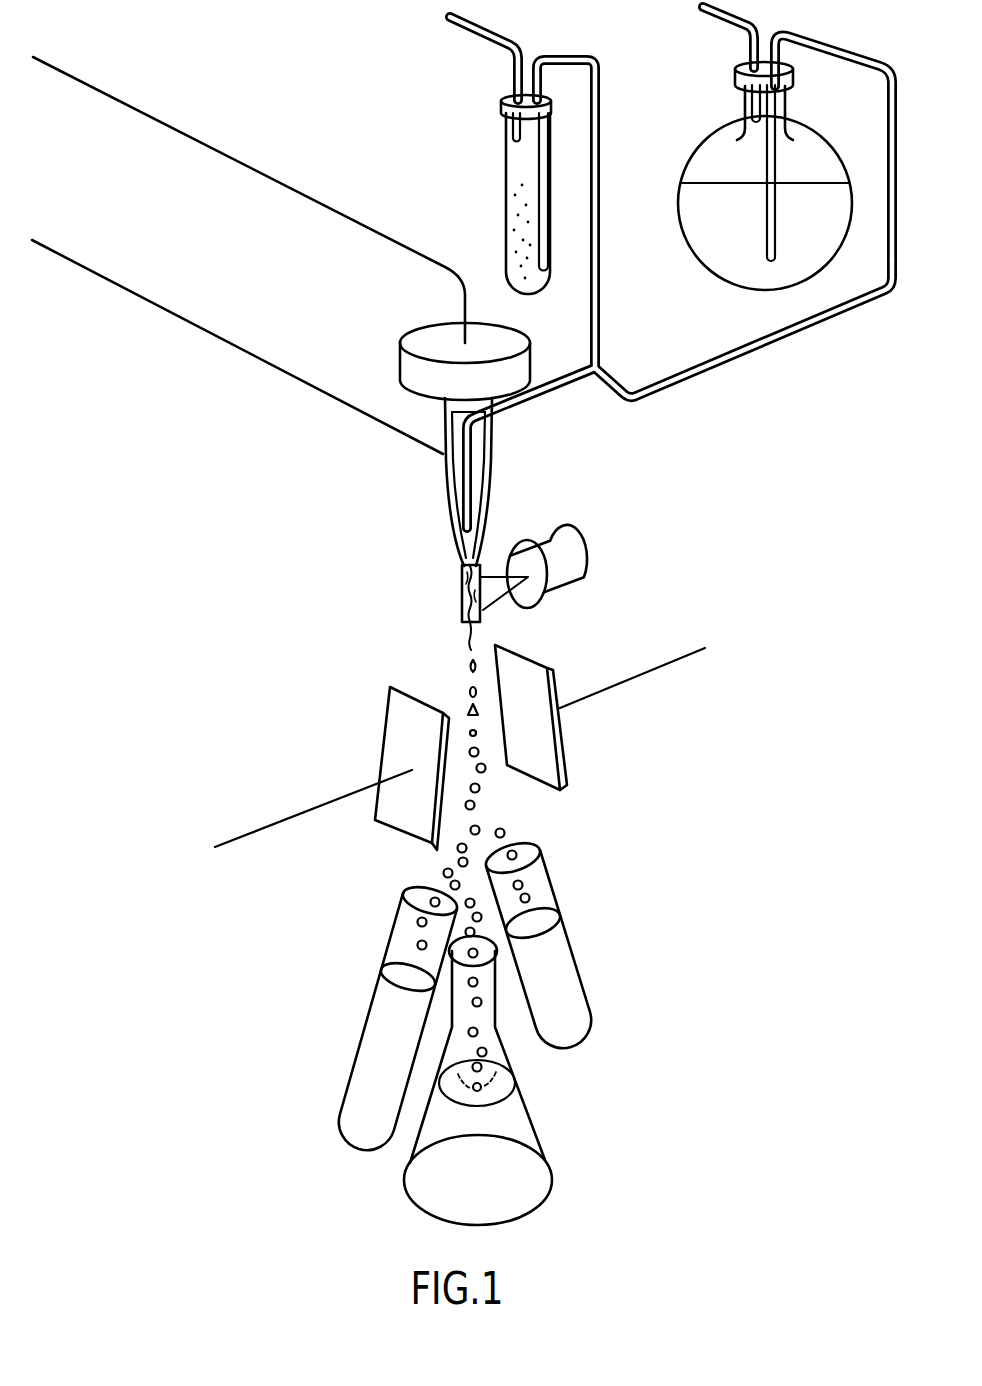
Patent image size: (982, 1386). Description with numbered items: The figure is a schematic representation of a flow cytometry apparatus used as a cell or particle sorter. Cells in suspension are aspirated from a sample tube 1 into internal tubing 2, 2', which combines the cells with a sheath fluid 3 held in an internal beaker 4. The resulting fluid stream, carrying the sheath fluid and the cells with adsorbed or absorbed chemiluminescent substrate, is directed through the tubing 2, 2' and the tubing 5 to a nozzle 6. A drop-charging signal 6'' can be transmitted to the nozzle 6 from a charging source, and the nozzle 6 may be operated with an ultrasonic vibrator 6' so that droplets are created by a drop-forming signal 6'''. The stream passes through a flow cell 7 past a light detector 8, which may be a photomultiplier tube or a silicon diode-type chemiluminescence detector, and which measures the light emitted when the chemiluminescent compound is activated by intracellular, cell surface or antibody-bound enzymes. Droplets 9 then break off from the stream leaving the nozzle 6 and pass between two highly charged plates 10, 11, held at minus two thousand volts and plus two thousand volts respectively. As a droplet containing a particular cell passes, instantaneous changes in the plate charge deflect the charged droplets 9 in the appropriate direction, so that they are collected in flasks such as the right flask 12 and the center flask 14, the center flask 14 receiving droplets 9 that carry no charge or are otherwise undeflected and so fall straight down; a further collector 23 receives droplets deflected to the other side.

The sample tube 1 is at (506, 145).
The internal tubing 2 is at (581, 214).
The internal tubing 2' is at (851, 147).
The sheath fluid 3 is at (708, 183).
The internal beaker 4 is at (722, 278).
The tubing 5 is at (530, 404).
The nozzle 6 is at (483, 482).
The ultrasonic vibrator 6' is at (483, 361).
The drop-charging signal 6'' is at (237, 347).
The drop-forming signal 6''' is at (249, 200).
The flow cell 7 is at (462, 613).
The light detector 8 is at (590, 555).
The droplets 9 is at (468, 668).
The charged plate 10 is at (556, 678).
The charged plate 11 is at (385, 733).
The flask 12 is at (554, 885).
The flask 14 is at (553, 1186).
The collection test tube 23 is at (370, 1016).